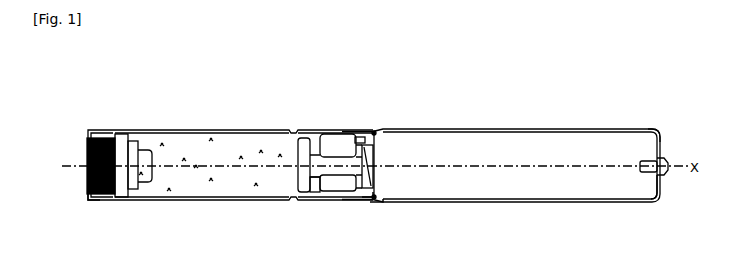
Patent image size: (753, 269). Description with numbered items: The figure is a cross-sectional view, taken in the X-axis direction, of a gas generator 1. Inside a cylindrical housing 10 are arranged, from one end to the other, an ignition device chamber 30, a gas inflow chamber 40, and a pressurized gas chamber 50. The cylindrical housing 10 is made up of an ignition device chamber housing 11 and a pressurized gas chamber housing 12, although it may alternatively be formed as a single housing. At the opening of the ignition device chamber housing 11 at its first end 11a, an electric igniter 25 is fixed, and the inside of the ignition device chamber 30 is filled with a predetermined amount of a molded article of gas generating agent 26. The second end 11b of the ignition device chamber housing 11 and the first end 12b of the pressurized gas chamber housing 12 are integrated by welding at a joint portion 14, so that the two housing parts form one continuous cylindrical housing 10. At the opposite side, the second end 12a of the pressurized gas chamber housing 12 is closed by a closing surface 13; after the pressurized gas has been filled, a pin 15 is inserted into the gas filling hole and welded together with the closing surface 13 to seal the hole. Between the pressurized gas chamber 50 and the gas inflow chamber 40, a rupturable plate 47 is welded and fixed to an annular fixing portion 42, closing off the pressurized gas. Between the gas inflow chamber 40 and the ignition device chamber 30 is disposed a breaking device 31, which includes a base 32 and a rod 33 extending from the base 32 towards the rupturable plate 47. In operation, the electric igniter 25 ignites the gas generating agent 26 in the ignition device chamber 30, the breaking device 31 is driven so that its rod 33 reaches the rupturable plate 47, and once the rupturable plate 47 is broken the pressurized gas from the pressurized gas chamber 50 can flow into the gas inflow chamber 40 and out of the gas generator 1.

The gas generator 1 is at (442, 206).
The cylindrical housing 10 is at (392, 73).
The ignition device chamber housing 11 is at (282, 128).
The first end 11a is at (88, 201).
The second end 11b is at (368, 200).
The pressurized gas chamber housing 12 is at (433, 128).
The second end 12a is at (660, 133).
The first end 12b is at (375, 203).
The closing surface 13 is at (652, 180).
The joint portion 14 is at (374, 130).
The pin 15 is at (668, 160).
The electric igniter 25 is at (124, 145).
The molded article of gas generating agent 26 is at (206, 139).
The ignition device chamber 30 is at (288, 159).
The breaking device 31 is at (334, 230).
The base 32 is at (306, 195).
The rod 33 is at (338, 172).
The gas inflow chamber 40 is at (343, 153).
The fixing portion 42 is at (377, 143).
The rupturable plate 47 is at (376, 175).
The pressurized gas chamber 50 is at (541, 155).